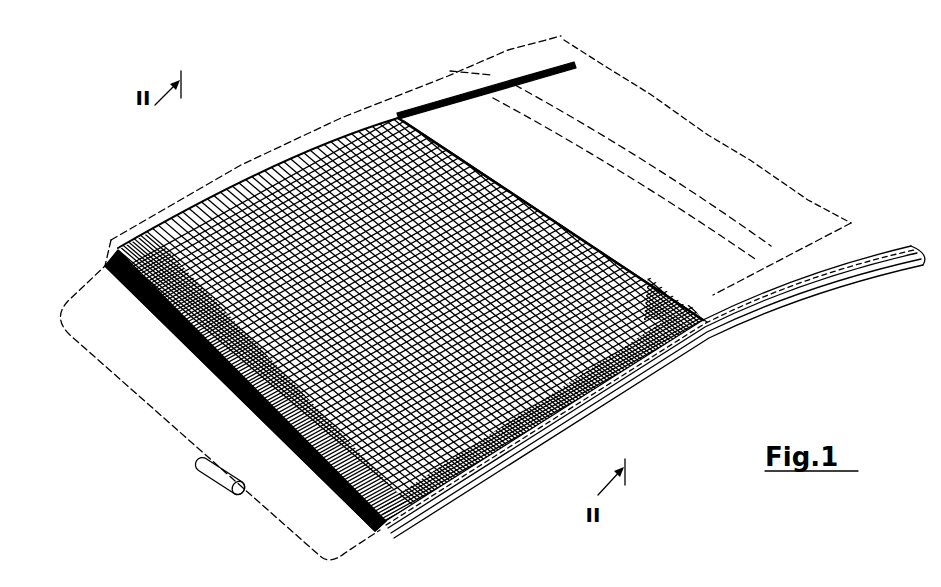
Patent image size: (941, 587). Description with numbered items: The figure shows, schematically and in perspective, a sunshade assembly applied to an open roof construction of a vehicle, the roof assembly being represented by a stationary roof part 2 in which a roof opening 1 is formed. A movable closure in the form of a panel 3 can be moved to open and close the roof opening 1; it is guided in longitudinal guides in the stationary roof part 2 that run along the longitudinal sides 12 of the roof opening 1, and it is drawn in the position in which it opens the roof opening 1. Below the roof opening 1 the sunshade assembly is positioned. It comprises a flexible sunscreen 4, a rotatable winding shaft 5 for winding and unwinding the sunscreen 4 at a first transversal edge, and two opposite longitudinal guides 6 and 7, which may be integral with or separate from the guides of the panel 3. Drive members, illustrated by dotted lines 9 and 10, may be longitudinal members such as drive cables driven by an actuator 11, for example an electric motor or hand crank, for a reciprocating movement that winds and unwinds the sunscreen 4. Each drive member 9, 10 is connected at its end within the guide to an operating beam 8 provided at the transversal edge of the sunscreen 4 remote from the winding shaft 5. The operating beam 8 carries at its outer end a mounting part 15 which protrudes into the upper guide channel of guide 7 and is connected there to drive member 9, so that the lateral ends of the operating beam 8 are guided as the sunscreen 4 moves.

The roof opening 1 is at (448, 118).
The stationary roof part 2 is at (337, 93).
The panel 3 is at (668, 130).
The flexible sunscreen 4 is at (297, 147).
The rotatable winding shaft 5 is at (222, 395).
The longitudinal guide 6 is at (233, 177).
The longitudinal guide 7 is at (667, 341).
The operating beam 8 is at (542, 203).
The drive member 9 is at (520, 430).
The drive member 10 is at (93, 263).
The actuator 11 is at (197, 478).
The longitudinal sides 12 is at (168, 180).
The mounting part 15 is at (307, 477).